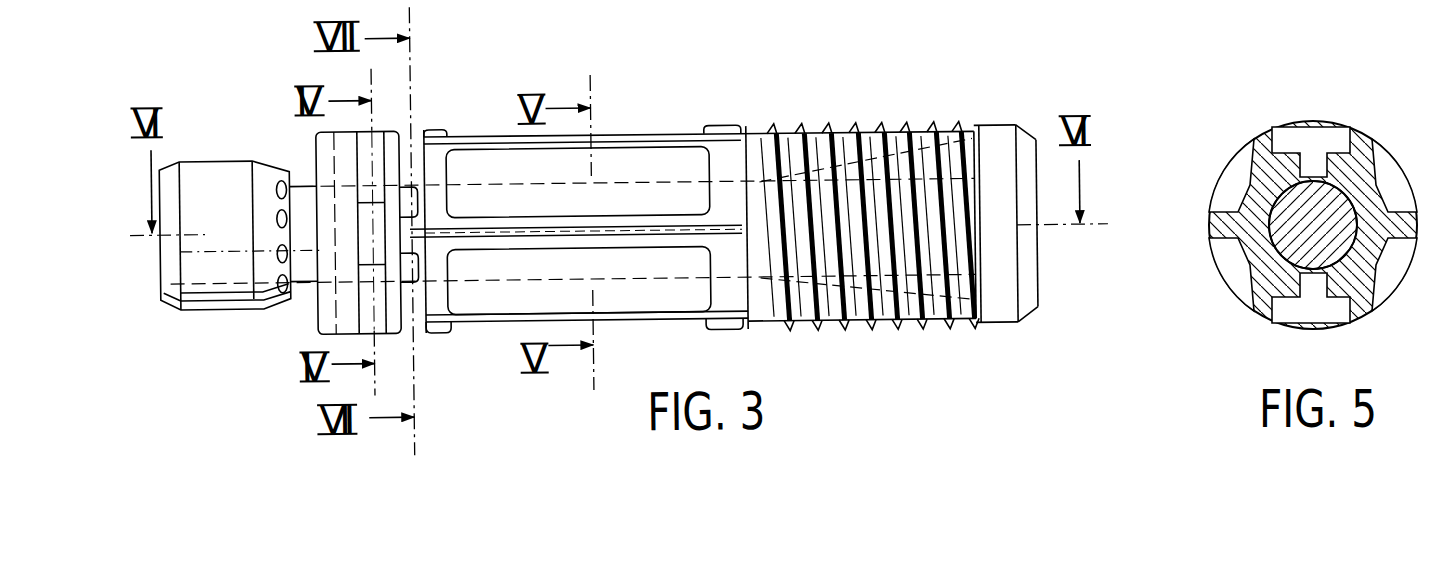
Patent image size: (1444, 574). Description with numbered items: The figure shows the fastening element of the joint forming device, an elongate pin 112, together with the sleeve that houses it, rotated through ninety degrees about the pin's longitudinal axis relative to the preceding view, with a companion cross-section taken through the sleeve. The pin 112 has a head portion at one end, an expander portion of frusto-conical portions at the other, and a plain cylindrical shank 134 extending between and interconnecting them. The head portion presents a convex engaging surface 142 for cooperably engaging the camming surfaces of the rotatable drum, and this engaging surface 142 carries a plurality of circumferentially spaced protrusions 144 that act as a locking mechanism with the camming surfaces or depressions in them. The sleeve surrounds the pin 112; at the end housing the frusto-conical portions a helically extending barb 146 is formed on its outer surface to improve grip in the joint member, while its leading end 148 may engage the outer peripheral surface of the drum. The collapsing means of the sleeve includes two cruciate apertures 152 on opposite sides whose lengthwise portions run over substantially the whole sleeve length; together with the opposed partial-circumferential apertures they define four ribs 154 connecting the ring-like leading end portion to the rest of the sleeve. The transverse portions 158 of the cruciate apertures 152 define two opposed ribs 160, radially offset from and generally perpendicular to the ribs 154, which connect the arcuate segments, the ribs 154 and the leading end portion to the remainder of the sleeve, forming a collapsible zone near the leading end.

In FIG. 3, the pin 112 is at (1028, 327).
In FIG. 3, the shank 134 is at (408, 267).
In FIG. 3, the engaging surface 142 is at (258, 281).
In FIG. 3, the protrusions 144 is at (265, 289).
In FIG. 3, the helically extending barb 146 is at (932, 139).
In FIG. 3, the leading end 148 is at (314, 312).
In FIG. 5, the cruciate apertures 152 is at (1315, 163).
In FIG. 3, the ribs 154 is at (367, 174).
In FIG. 3, the transverse portions 158 is at (410, 146).
In FIG. 3, the ribs 160 is at (409, 239).